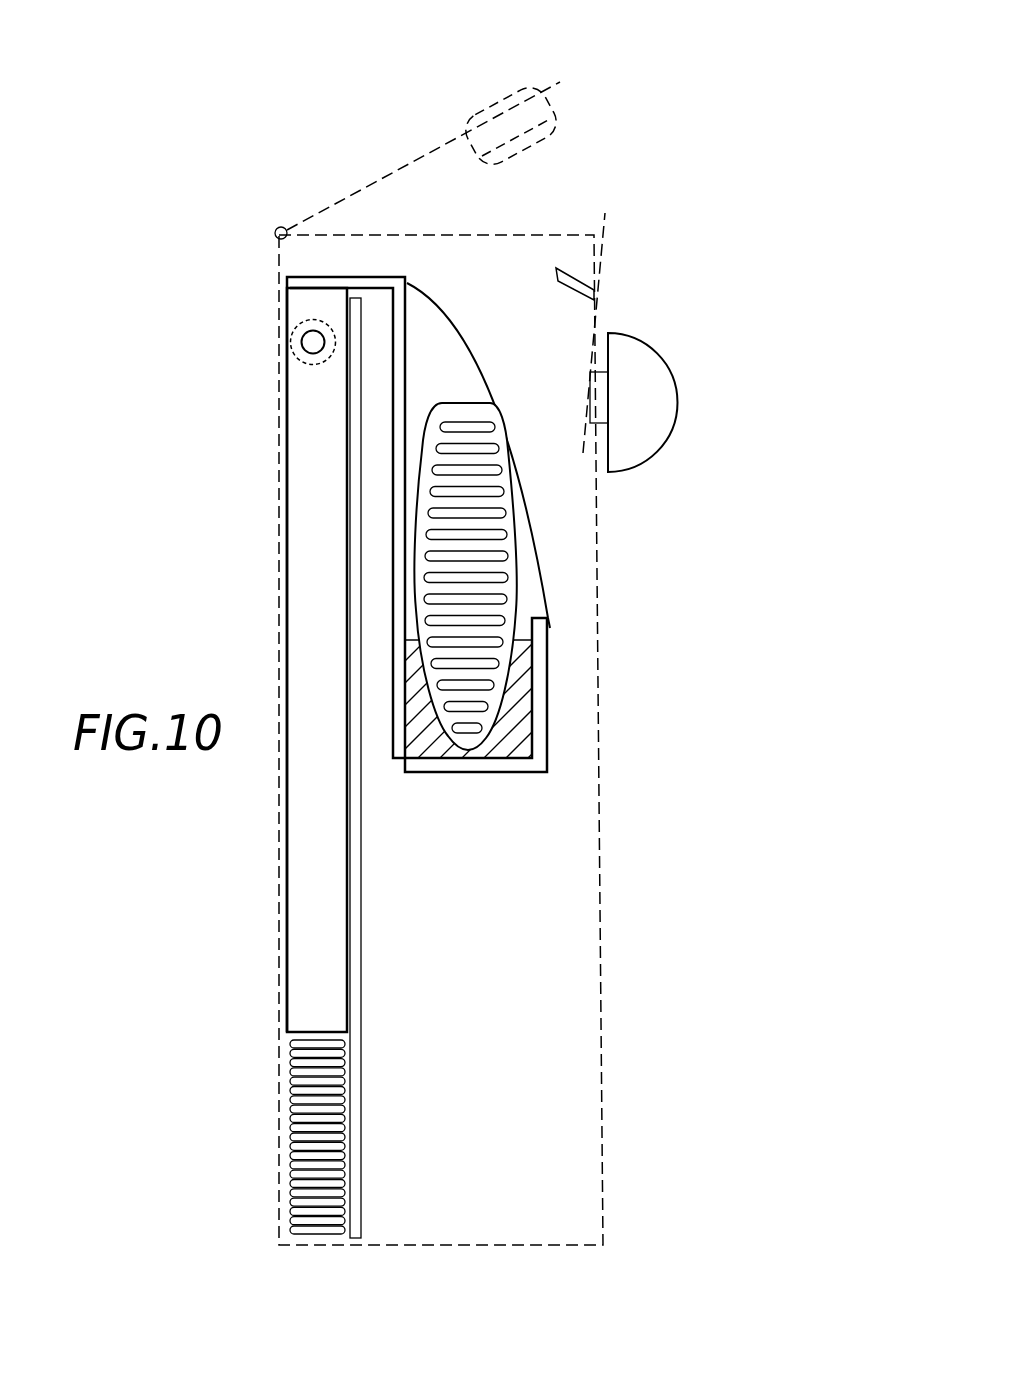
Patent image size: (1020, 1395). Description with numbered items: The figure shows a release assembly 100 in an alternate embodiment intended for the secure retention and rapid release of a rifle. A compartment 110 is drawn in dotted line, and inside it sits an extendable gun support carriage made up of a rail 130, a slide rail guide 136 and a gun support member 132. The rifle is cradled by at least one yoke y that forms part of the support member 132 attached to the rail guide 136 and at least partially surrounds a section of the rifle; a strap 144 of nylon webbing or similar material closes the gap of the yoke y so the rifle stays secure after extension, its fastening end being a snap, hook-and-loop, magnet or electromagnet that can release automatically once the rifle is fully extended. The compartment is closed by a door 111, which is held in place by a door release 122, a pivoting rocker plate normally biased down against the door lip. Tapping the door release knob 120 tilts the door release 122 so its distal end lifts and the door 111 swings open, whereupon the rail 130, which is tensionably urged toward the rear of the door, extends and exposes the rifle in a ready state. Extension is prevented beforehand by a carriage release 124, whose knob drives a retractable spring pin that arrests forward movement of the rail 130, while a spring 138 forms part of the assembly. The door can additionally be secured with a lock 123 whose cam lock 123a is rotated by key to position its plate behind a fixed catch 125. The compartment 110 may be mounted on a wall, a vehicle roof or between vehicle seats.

The release assembly 100 is at (289, 198).
The compartment 110 is at (599, 565).
The door 111 is at (397, 168).
The door release knob 120 is at (618, 347).
The door release 122 is at (605, 258).
The mouthpiece 123 is at (490, 97).
The compartment lock 123a is at (483, 157).
The carriage release 124 is at (298, 325).
The fixed catch 125 is at (557, 272).
The rail 130 is at (318, 570).
The support member 132 is at (512, 770).
The slide rail guide 136 is at (359, 904).
The spring 138 is at (295, 1078).
The strap 144 is at (452, 327).
The yoke y is at (513, 745).